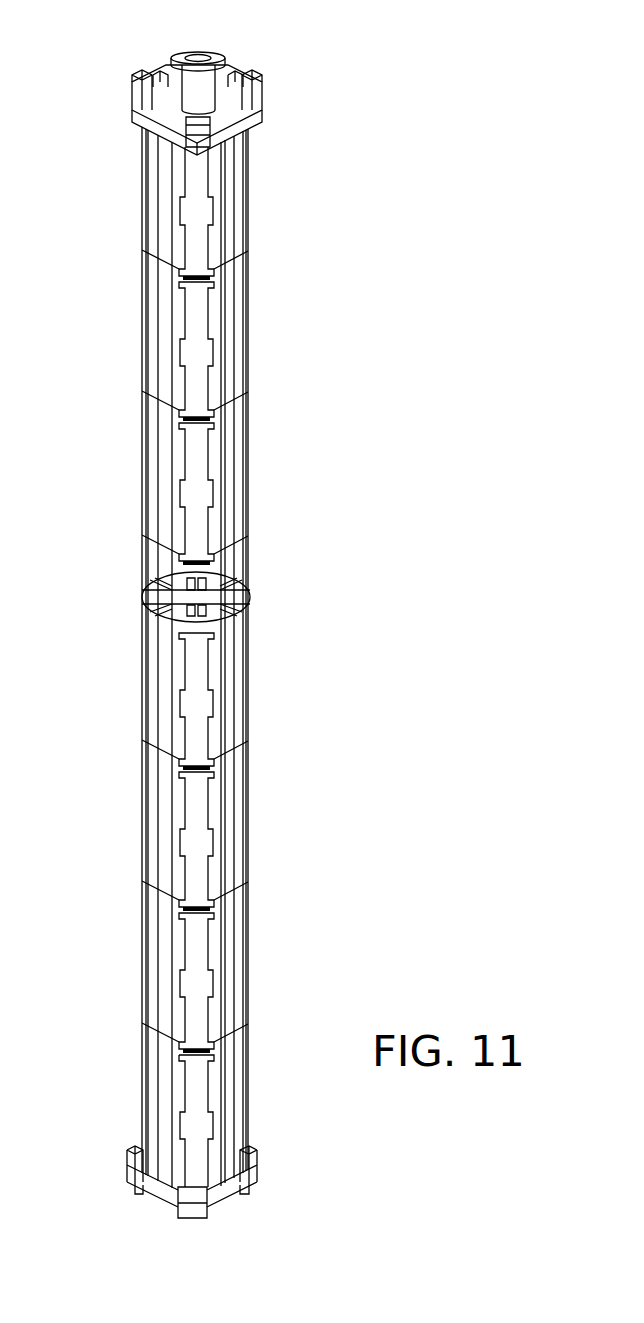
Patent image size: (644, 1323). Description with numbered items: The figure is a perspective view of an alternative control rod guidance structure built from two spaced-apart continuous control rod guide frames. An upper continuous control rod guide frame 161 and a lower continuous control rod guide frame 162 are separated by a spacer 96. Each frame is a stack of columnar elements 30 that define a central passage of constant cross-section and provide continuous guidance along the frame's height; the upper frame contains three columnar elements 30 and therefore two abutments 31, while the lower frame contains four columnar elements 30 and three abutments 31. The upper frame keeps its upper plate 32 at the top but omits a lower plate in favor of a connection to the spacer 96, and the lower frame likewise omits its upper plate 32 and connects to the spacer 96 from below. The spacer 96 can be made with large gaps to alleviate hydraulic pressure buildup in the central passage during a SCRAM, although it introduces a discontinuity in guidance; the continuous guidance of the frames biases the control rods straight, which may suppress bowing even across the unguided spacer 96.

The upper continuous control rod guide frame 161 is at (380, 307).
The lower continuous control rod guide frame 162 is at (392, 758).
The columnar element 30 is at (143, 192).
The abutment 31 is at (142, 250).
The upper plate 32 is at (170, 72).
The spacer 96 is at (270, 578).